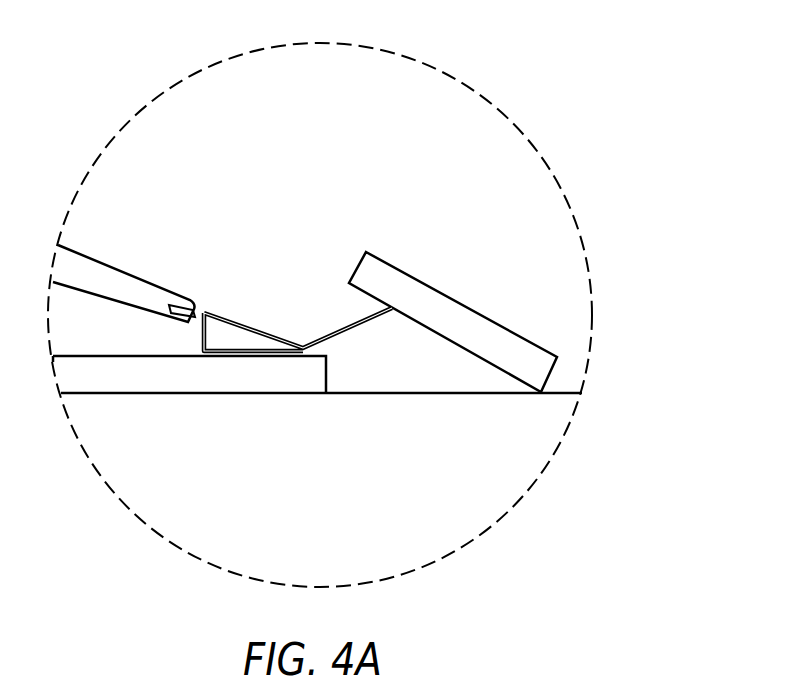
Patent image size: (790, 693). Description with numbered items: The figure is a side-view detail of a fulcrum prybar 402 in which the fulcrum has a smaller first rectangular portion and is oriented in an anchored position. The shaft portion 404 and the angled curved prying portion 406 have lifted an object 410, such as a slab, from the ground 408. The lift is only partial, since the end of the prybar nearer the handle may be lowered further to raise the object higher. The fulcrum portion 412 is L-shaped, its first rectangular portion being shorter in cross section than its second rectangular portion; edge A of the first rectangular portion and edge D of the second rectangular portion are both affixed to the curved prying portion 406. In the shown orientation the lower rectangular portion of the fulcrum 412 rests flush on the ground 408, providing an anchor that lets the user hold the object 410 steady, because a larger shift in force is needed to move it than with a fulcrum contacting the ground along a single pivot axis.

The prybar detail 402 is at (592, 275).
The shaft portion 404 is at (133, 275).
The curved prying portion 406 is at (251, 323).
The ground 408 is at (302, 395).
The object 410 is at (445, 292).
The fulcrum portion 412 is at (227, 357).
The edge D is at (207, 314).
The edge A is at (303, 350).